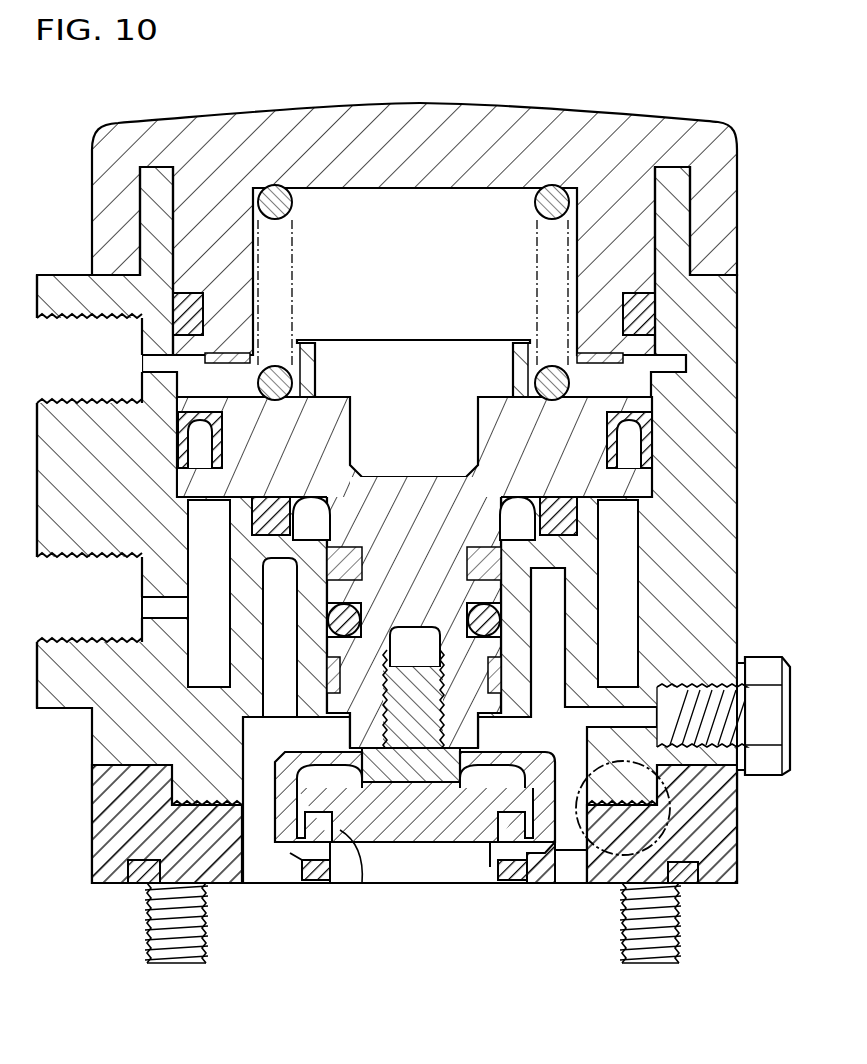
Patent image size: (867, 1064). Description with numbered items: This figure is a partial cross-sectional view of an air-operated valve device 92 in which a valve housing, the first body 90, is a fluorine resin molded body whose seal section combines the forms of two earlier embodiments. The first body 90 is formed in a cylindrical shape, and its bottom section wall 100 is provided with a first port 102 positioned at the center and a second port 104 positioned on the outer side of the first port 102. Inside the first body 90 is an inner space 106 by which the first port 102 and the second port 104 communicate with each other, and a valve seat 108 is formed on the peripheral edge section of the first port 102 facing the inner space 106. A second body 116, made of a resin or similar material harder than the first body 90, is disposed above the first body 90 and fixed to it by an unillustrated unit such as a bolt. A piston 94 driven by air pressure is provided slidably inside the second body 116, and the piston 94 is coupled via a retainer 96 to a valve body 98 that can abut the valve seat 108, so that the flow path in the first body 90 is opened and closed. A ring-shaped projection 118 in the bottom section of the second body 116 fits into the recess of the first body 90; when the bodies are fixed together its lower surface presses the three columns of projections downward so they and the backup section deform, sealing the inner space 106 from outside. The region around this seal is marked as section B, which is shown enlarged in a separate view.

The air-operated valve device 92 is at (769, 62).
The second body 116 is at (735, 500).
The piston 94 is at (552, 452).
The retainer 96 is at (300, 765).
The first port 102 is at (423, 877).
The valve body 98 is at (470, 822).
The second port 104 is at (268, 880).
The bottom section wall 100 is at (543, 873).
The valve seat 108 is at (345, 835).
The inner space 106 is at (253, 823).
The first body 90 is at (718, 845).
The ring-shaped projection 118 is at (628, 792).
The section B is at (672, 815).